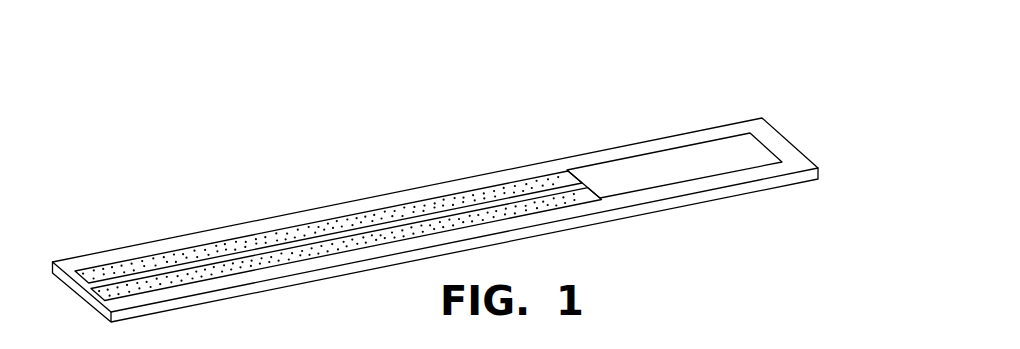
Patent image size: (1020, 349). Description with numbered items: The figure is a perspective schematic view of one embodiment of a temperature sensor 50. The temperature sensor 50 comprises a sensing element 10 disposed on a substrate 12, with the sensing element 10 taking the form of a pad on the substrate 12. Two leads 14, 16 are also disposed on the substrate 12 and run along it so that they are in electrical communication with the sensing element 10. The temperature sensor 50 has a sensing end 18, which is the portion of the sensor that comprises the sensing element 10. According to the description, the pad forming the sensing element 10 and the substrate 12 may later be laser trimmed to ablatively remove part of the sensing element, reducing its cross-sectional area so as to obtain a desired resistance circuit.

The temperature sensor 50 is at (461, 189).
The sensing element 10 is at (743, 152).
The substrate 12 is at (788, 165).
The lead 14 is at (297, 232).
The lead 16 is at (378, 235).
The sensing end 18 is at (548, 158).